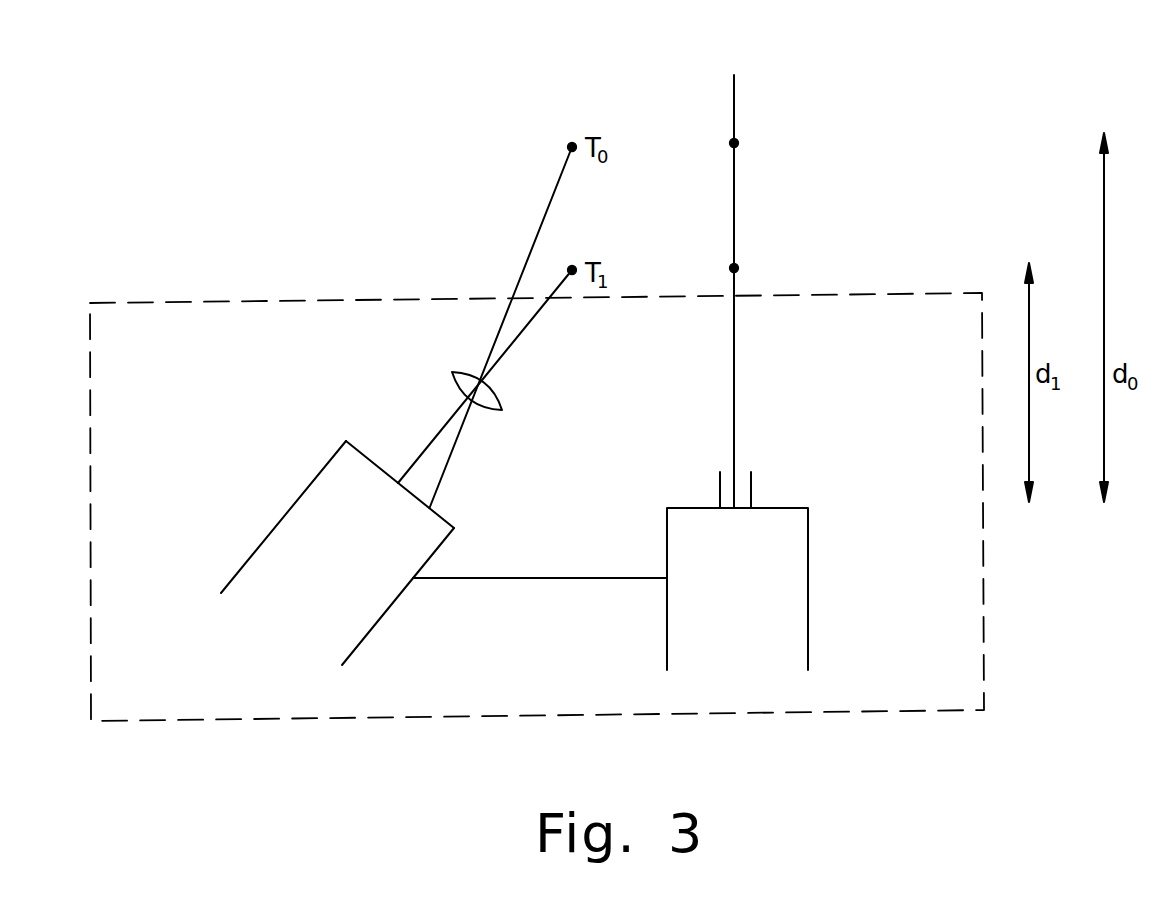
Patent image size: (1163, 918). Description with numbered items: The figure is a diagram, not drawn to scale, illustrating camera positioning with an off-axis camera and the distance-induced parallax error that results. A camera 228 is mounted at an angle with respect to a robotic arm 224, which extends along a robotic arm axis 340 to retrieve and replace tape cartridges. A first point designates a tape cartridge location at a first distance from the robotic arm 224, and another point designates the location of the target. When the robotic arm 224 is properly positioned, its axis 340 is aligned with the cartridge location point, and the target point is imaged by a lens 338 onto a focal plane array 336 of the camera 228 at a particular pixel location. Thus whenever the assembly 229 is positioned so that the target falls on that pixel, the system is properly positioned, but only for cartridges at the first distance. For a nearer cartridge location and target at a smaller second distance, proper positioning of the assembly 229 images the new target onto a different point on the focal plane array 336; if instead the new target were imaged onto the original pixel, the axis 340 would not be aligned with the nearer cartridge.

The robotic arm 224 is at (808, 570).
The camera 228 is at (300, 493).
The assembly 229 is at (217, 303).
The focal plane array 336 is at (360, 447).
The lens 338 is at (500, 398).
The robotic arm axis 340 is at (734, 103).